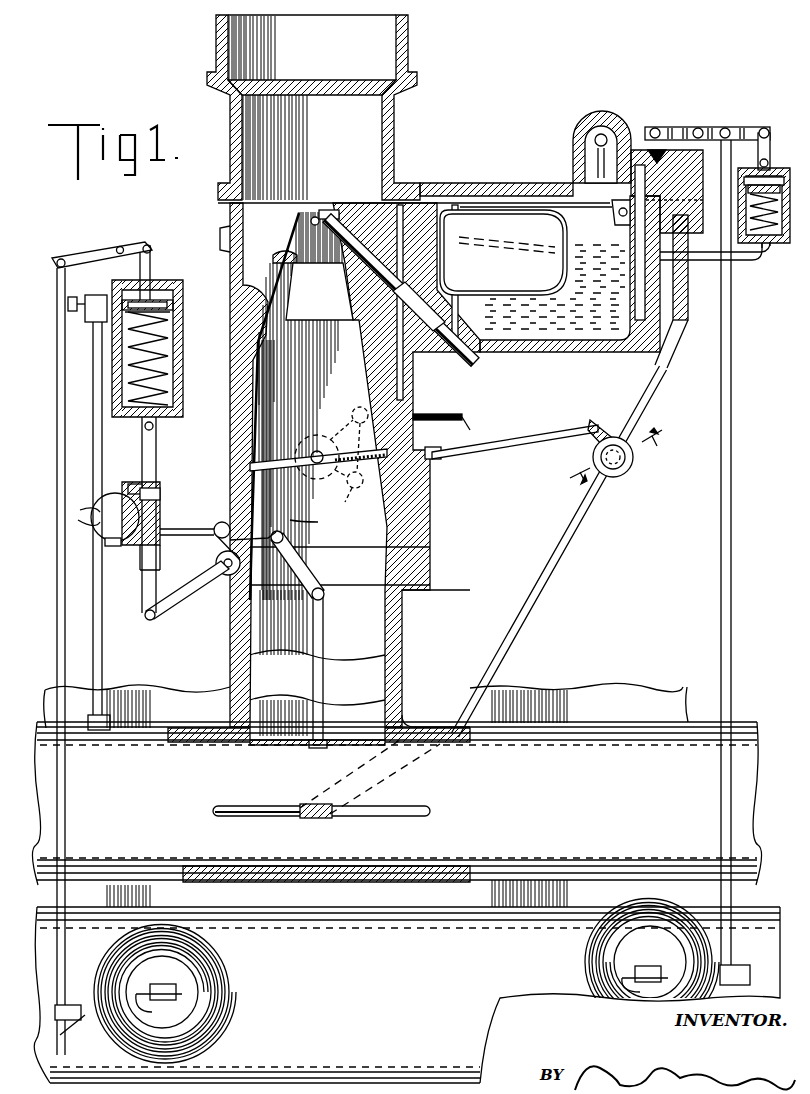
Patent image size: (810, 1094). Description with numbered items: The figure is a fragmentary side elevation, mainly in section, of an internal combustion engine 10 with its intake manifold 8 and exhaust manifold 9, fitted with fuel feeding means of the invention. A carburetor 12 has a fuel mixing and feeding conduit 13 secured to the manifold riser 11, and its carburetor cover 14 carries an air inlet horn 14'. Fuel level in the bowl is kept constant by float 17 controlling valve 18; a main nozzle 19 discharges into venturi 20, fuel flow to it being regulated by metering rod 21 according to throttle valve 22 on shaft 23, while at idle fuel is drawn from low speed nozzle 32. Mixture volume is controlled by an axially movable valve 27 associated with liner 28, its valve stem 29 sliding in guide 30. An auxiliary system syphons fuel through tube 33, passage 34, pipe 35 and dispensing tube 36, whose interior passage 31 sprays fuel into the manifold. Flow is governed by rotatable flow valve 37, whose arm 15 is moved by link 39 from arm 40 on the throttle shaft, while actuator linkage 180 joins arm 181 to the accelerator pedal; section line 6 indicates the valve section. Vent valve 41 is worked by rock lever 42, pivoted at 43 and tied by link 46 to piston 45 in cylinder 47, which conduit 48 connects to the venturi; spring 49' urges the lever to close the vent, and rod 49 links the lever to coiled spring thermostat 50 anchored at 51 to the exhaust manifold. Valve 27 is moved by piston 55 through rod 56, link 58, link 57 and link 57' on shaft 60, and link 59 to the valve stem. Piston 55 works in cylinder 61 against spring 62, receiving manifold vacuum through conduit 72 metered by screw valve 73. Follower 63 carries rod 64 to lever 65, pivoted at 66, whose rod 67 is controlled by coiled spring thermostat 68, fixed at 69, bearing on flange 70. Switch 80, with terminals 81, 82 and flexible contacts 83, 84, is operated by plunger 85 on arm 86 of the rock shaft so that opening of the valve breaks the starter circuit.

The section line 6 is at (612, 449).
The intake manifold 8 is at (700, 722).
The exhaust manifold 9 is at (395, 912).
The internal combustion engine 10 is at (600, 690).
The manifold riser 11 is at (405, 630).
The carburetor 12 is at (229, 240).
The fuel mixing and feeding conduit 13 is at (246, 412).
The carburetor cover 14 is at (561, 191).
The air inlet horn 14' is at (322, 107).
The arm 15 is at (612, 424).
The float 17 is at (568, 232).
The valve 18 is at (580, 182).
The main nozzle 19 is at (360, 265).
The venturi 20 is at (322, 208).
The metering rod 21 is at (457, 205).
The throttle valve 22 is at (300, 472).
The shaft 23 is at (328, 440).
The axially movable valve 27 is at (312, 748).
The liner 28 is at (385, 605).
The valve stem 29 is at (325, 630).
The guide 30 is at (335, 658).
The interior passage 31 is at (236, 808).
The low speed nozzle 32 is at (425, 455).
The tube 33 is at (570, 282).
The passage 34 is at (650, 148).
The pipe 35 is at (562, 562).
The dispensing tube 36 is at (270, 816).
The rotatable flow valve 37 is at (616, 470).
The link 39 is at (515, 445).
The arm 40 is at (355, 494).
The vent valve 41 is at (653, 128).
The rock lever 42 is at (731, 128).
The pivot 43 is at (698, 128).
The piston 45 is at (788, 168).
The link 46 is at (770, 145).
The cylinder 47 is at (744, 170).
The conduit 48 is at (708, 261).
The rod 49 is at (742, 557).
The spring 49' is at (780, 254).
The coiled spring thermostat 50 is at (595, 958).
The fixed end 51 is at (635, 980).
The piston 55 is at (170, 388).
The rod 56 is at (155, 428).
The link 57 is at (187, 600).
The link 57' is at (316, 523).
The link 58 is at (157, 456).
The link 59 is at (300, 567).
The shaft 60 is at (228, 576).
The cylinder 61 is at (183, 358).
The spring 62 is at (160, 330).
The follower 63 is at (170, 303).
The rod 64 is at (150, 258).
The lever 65 is at (92, 250).
The pivot 66 is at (123, 247).
The rod 67 is at (56, 392).
The coiled spring thermostat 68 is at (238, 986).
The fixed end 69 is at (166, 1000).
The flange 70 is at (58, 1004).
The conduit 72 is at (92, 432).
The screw valve 73 is at (82, 322).
The switch 80 is at (112, 493).
The switch terminal 81 is at (134, 484).
The switch terminal 82 is at (112, 546).
The flexible contact 83 is at (150, 492).
The flexible contact 84 is at (140, 560).
The plunger 85 is at (196, 525).
The arm 86 is at (226, 523).
The actuator linkage 180 is at (443, 432).
The arm 181 is at (360, 407).